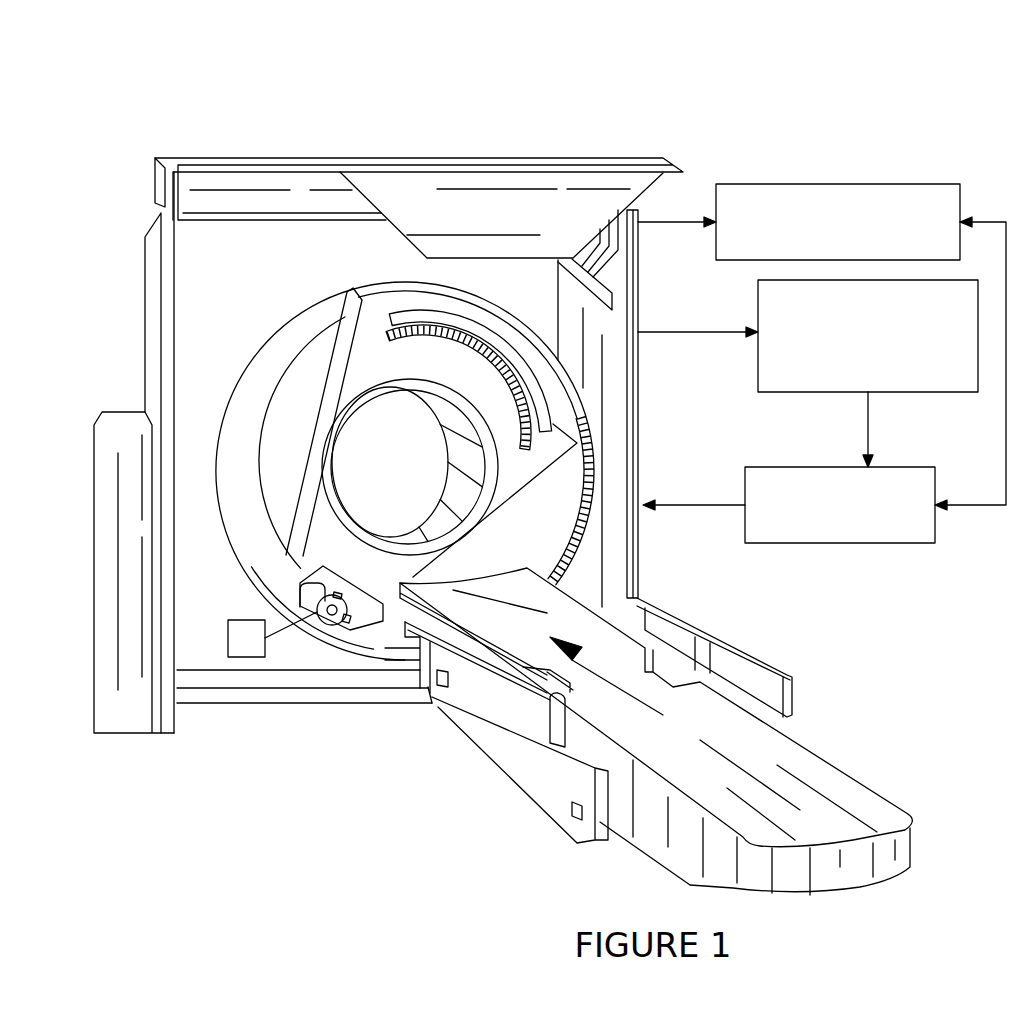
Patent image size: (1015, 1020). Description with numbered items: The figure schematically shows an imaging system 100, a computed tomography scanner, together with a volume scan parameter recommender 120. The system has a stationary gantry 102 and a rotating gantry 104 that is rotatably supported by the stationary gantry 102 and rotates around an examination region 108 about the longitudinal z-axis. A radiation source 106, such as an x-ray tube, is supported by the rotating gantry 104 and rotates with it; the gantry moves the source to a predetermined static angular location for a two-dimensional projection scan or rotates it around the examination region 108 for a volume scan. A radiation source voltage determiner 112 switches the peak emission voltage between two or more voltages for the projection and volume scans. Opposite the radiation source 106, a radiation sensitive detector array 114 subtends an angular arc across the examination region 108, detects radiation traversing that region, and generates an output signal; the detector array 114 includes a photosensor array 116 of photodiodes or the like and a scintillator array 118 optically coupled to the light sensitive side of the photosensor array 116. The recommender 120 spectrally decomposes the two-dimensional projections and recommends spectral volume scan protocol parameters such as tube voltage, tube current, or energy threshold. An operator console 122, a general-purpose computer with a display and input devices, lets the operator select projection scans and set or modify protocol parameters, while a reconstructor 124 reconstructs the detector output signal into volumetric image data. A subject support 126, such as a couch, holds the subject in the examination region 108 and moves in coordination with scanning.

The imaging system 100 is at (198, 64).
The stationary gantry 102 is at (187, 157).
The rotating gantry 104 is at (362, 358).
The radiation source 106 is at (327, 622).
The examination region 108 is at (415, 481).
The radiation source voltage determiner 112 is at (247, 657).
The radiation sensitive detector array 114 is at (533, 387).
The photosensor array 116 is at (417, 317).
The scintillator array 118 is at (452, 335).
The volume scan parameter recommender 120 is at (885, 392).
The operator console 122 is at (840, 543).
The reconstructor 124 is at (835, 184).
The subject support 126 is at (840, 790).